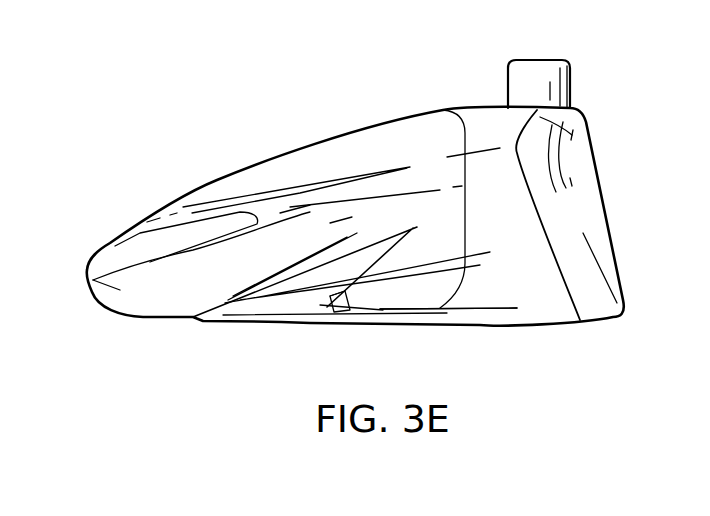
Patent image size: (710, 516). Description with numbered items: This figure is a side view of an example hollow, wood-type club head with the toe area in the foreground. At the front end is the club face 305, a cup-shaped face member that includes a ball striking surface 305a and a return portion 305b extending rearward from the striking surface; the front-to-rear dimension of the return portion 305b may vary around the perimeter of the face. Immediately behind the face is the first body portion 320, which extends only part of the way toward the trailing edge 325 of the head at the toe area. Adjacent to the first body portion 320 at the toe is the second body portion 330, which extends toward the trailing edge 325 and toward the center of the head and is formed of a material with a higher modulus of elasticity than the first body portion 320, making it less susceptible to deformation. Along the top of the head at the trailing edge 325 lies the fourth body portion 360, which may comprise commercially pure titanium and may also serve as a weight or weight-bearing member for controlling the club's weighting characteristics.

The club face 305 is at (634, 211).
The ball striking surface 305a is at (583, 170).
The return portion 305b is at (540, 117).
The first body portion 320 is at (528, 300).
The trailing edge 325 is at (120, 290).
The second body portion 330 is at (373, 300).
The fourth body portion 360 is at (123, 245).